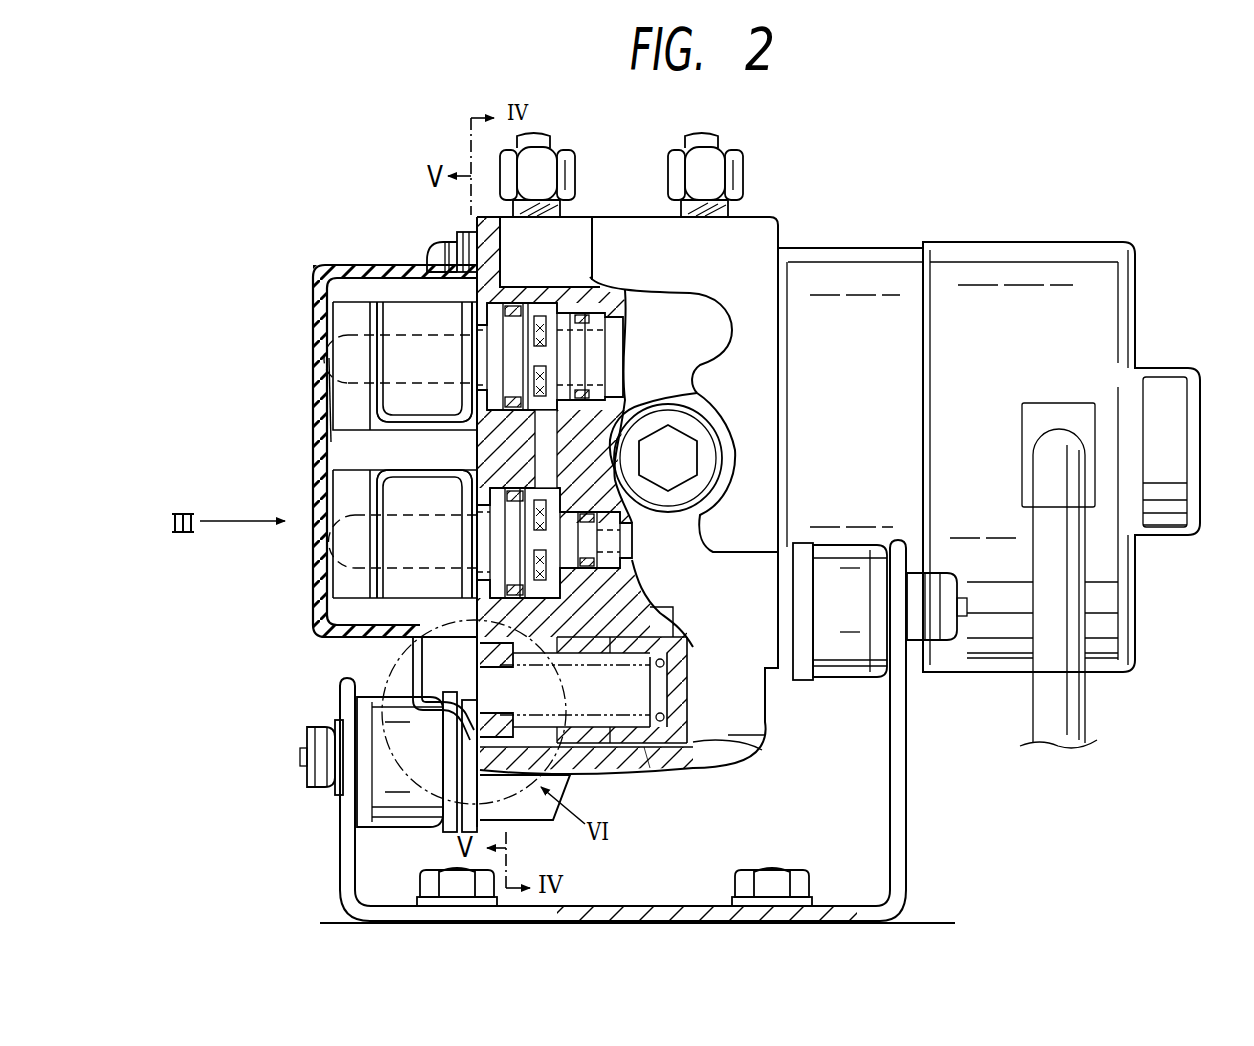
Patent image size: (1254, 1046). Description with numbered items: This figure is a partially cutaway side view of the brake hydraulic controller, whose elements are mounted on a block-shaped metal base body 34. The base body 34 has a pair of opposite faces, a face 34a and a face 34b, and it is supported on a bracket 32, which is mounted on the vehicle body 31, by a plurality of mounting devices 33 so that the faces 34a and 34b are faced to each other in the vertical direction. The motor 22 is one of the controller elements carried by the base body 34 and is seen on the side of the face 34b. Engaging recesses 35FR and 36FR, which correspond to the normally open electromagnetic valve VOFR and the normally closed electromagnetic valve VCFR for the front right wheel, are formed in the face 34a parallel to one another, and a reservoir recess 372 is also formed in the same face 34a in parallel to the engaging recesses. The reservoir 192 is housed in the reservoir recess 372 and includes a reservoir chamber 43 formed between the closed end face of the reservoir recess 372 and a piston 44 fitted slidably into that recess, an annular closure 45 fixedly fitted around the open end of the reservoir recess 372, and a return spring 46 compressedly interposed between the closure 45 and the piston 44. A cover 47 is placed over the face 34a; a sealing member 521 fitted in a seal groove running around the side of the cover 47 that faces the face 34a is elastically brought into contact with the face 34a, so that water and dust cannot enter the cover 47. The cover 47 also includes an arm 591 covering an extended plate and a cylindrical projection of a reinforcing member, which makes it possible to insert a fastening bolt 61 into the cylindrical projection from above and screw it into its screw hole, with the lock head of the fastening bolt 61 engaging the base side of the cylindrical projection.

The motor 22 is at (982, 447).
The vehicle body 31 is at (930, 921).
The bracket 32 is at (900, 857).
The mounting devices 33 is at (837, 556).
The base body 34 is at (720, 758).
The face 34a is at (477, 450).
The face 34b is at (783, 452).
The engaging recess 35FR is at (622, 334).
The engaging recess 36FR is at (630, 537).
The reservoir recess 372 is at (620, 760).
The reservoir 192 is at (657, 752).
The reservoir chamber 43 is at (766, 752).
The piston 44 is at (680, 702).
The annular closure 45 is at (477, 660).
The return spring 46 is at (662, 660).
The cover 47 is at (316, 463).
The sealing member 521 is at (500, 270).
The arm 591 is at (467, 230).
The fastening bolt 61 is at (438, 252).
The normally open electromagnetic valve VOFR is at (385, 296).
The normally closed electromagnetic valve VCFR is at (358, 603).